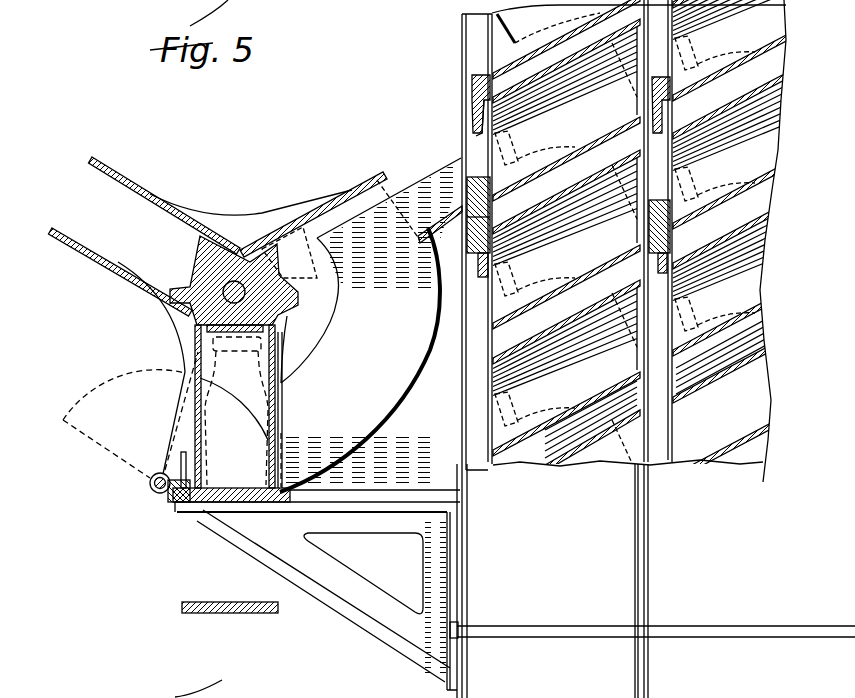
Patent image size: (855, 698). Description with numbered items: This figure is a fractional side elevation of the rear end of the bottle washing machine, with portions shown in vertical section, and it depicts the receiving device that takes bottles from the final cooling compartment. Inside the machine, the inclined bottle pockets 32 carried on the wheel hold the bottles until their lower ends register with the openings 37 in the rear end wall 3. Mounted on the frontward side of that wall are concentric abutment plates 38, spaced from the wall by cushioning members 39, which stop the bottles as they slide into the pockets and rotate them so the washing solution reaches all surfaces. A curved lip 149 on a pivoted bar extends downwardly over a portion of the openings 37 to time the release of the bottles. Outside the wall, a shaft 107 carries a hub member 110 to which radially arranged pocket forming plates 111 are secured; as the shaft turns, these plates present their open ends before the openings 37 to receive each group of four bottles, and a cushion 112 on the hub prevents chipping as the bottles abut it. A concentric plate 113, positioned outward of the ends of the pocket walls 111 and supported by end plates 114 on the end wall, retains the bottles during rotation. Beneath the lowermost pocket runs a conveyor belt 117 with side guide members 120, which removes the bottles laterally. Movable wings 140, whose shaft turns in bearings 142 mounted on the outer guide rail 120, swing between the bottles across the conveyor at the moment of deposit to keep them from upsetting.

The rear end wall 3 is at (462, 27).
The abutment plates 38 is at (488, 53).
The openings 37 is at (478, 133).
The curved lip 149 is at (487, 135).
The cushioning members 39 is at (460, 203).
The bottle pockets 32 is at (515, 317).
The concentric plate 113 is at (420, 372).
The pocket forming plates 111 is at (107, 174).
The shaft 107 is at (240, 280).
The hub member 110 is at (227, 242).
The cushion 112 is at (203, 270).
The movable wings 140 is at (170, 420).
The side guide members 120 is at (186, 462).
The end plates 114 is at (152, 488).
The bearings 142 is at (167, 500).
The conveyor belt 117 is at (208, 503).